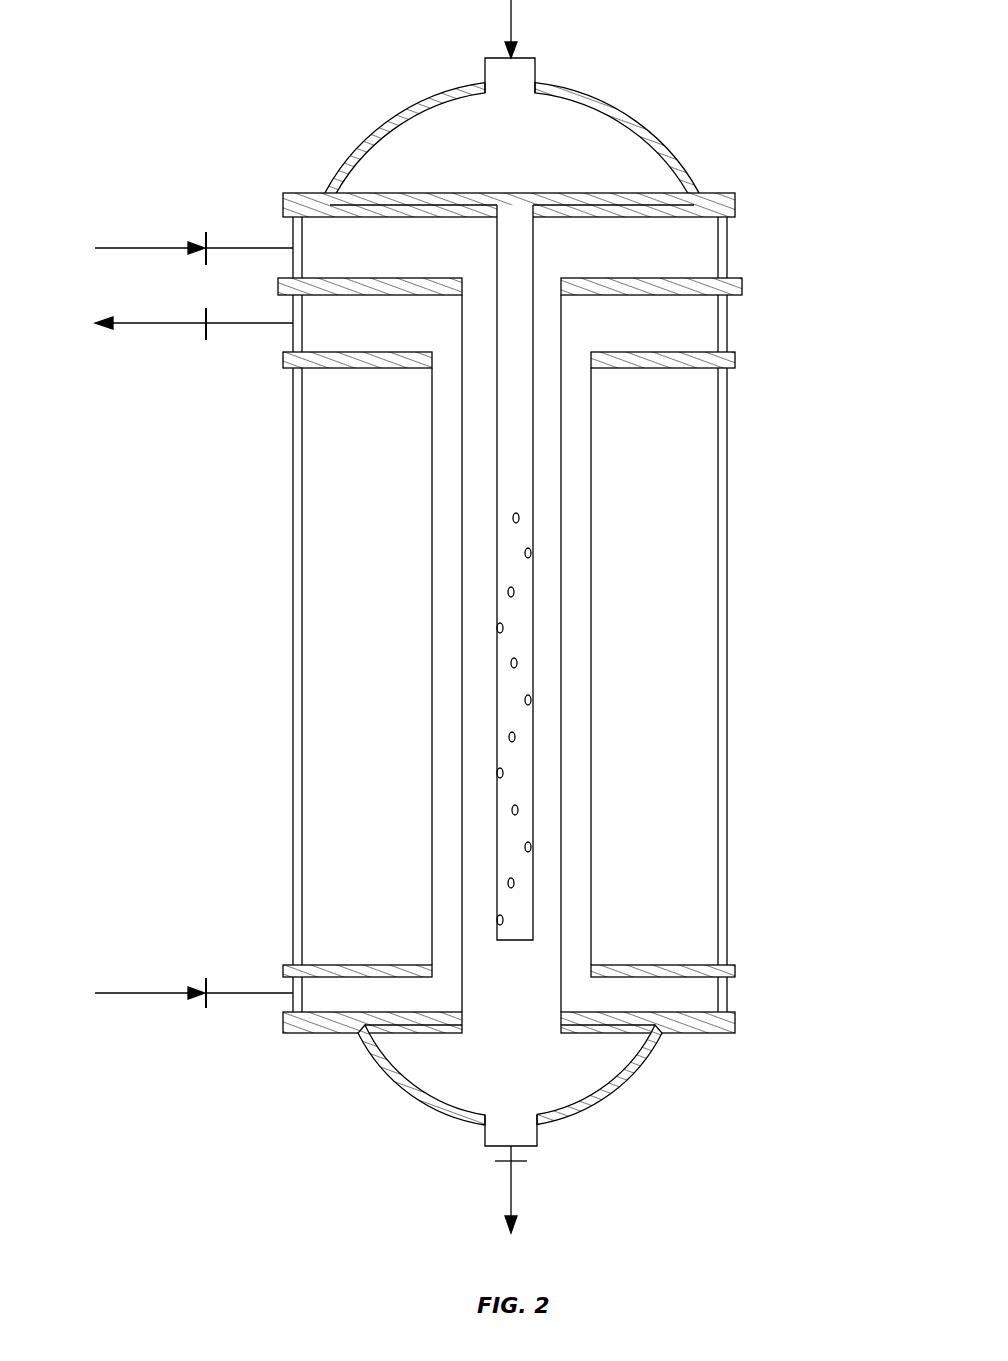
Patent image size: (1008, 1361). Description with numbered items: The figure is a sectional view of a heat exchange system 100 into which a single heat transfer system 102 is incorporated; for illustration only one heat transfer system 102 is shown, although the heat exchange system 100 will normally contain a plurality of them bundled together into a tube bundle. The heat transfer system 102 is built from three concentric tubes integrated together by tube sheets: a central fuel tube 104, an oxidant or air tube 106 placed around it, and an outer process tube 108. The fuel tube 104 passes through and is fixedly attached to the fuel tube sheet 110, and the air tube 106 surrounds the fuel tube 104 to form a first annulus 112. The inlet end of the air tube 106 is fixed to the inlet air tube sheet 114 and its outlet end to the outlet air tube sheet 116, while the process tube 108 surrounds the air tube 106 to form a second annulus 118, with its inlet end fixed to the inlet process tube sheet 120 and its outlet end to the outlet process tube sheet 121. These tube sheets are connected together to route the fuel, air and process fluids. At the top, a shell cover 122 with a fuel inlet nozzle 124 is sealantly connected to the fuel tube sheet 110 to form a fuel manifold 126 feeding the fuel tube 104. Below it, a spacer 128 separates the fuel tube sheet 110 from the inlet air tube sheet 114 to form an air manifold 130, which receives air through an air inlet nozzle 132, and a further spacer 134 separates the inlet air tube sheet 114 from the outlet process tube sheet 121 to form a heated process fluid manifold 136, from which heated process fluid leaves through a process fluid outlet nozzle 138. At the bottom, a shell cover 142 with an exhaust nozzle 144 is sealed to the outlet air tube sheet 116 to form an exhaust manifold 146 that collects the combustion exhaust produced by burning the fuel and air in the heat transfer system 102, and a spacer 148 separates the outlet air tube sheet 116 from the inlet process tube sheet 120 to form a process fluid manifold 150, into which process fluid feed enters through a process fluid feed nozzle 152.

The heat exchange system 100 is at (780, 86).
The heat transfer system 102 is at (617, 578).
The fuel tube 104 is at (533, 727).
The air tube 106 is at (562, 796).
The process tube 108 is at (591, 920).
The fuel tube sheet 110 is at (735, 210).
The first annulus 112 is at (545, 397).
The inlet air tube sheet 114 is at (742, 288).
The outlet air tube sheet 116 is at (735, 1020).
The second annulus 118 is at (577, 448).
The inlet process tube sheet 120 is at (735, 972).
The outlet process tube sheet 121 is at (735, 358).
The shell cover 122 is at (632, 108).
The fuel inlet nozzle 124 is at (537, 62).
The fuel manifold 126 is at (538, 158).
The spacer 128 is at (727, 247).
The air manifold 130 is at (391, 263).
The air inlet nozzle 132 is at (245, 248).
The spacer 134 is at (727, 320).
The heated process fluid manifold 136 is at (391, 335).
The process fluid outlet nozzle 138 is at (245, 323).
The shell cover 142 is at (632, 1082).
The exhaust nozzle 144 is at (537, 1133).
The exhaust manifold 146 is at (536, 1078).
The spacer 148 is at (727, 992).
The process fluid manifold 150 is at (396, 1005).
The process fluid feed nozzle 152 is at (245, 993).